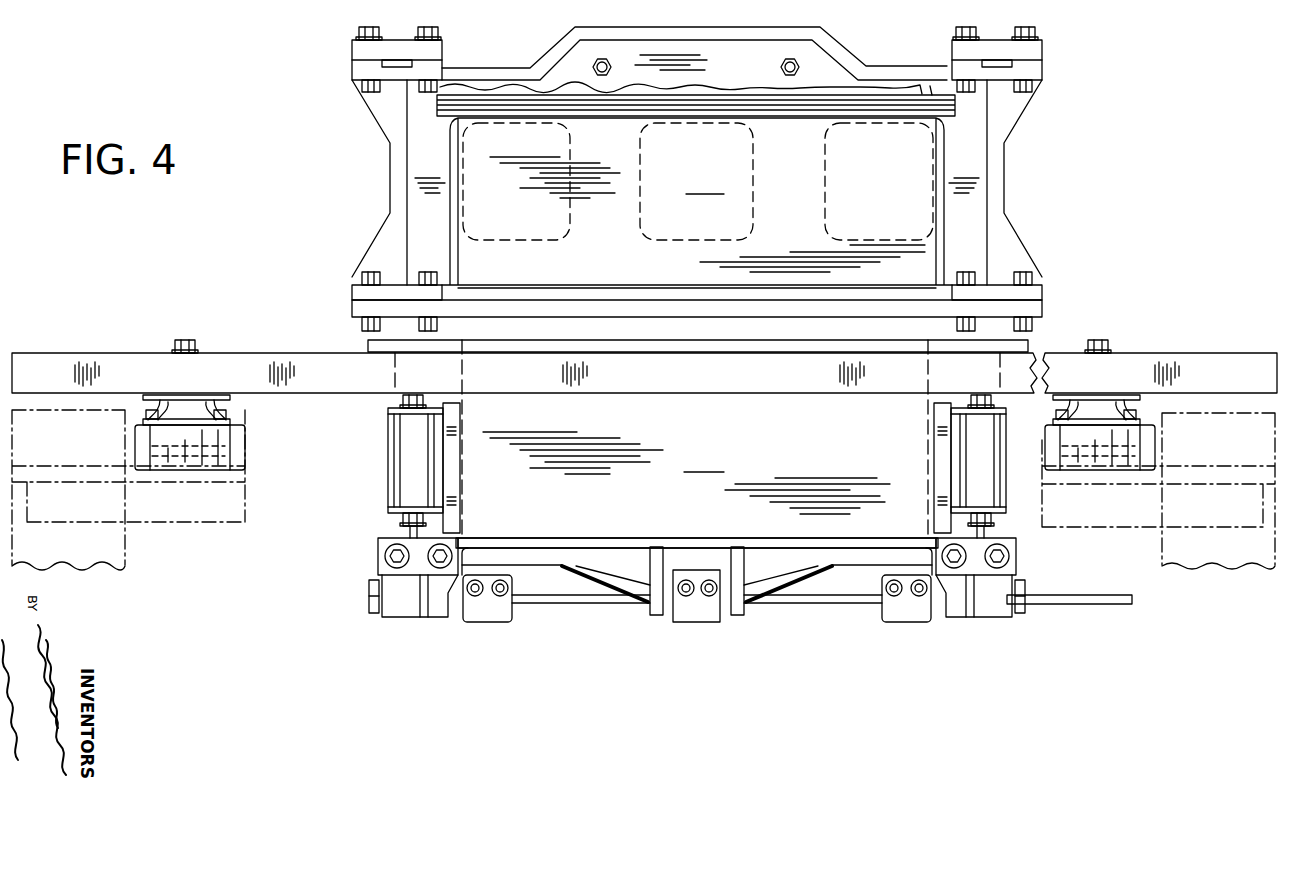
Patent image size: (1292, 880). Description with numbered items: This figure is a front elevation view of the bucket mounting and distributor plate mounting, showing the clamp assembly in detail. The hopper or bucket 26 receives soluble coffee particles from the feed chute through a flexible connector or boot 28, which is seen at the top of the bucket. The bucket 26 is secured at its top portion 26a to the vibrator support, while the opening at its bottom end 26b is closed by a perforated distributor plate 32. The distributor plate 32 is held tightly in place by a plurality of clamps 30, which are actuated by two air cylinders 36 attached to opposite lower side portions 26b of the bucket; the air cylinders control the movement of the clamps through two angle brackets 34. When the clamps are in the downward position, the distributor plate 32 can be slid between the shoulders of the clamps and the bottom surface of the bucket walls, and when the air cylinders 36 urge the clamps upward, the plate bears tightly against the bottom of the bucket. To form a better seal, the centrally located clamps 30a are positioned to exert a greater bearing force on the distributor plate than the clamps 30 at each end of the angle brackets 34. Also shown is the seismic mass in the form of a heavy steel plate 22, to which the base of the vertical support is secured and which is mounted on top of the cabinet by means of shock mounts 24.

The heavy steel plate 22 is at (803, 375).
The shock mounts 24 is at (215, 435).
The bucket 26 is at (492, 471).
The top portion of the bucket 26a is at (697, 203).
The bottom end of the bucket 26b is at (686, 473).
The flexible connector or boot 28 is at (688, 104).
The clamps 30 is at (422, 606).
The centrally located clamps 30a is at (700, 622).
The perforated distributor plate 32 is at (1050, 597).
The angle brackets 34 is at (395, 421).
The air cylinders 36 is at (398, 450).